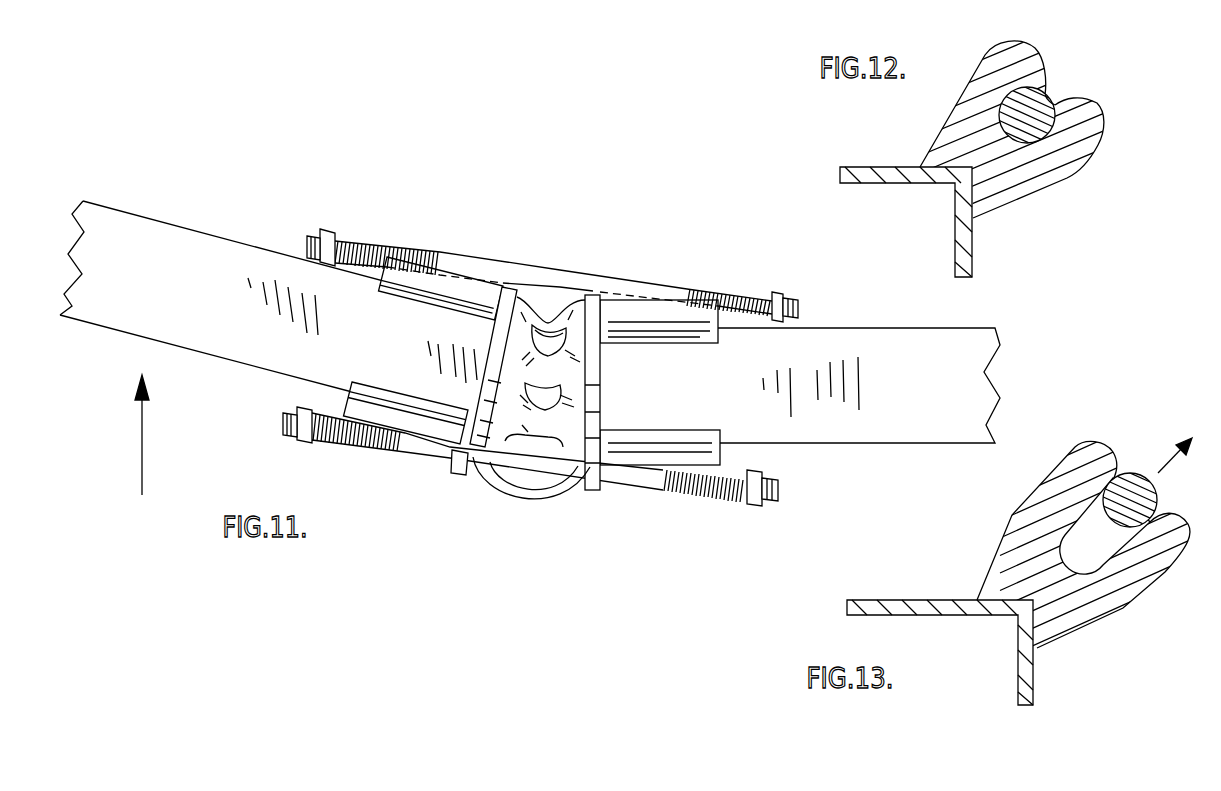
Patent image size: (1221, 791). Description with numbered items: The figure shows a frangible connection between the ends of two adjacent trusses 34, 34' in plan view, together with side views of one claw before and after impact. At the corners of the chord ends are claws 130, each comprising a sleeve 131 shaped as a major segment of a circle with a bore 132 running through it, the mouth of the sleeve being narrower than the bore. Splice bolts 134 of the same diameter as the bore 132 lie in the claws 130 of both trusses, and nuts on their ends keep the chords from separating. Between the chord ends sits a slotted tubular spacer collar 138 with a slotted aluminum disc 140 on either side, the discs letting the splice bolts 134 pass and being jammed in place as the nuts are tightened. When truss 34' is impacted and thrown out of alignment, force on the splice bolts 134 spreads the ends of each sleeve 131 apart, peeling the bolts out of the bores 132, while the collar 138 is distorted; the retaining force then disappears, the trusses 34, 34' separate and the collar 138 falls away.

In FIG. 11, the truss 34 is at (859, 350).
In FIG. 12, the truss 34 is at (906, 198).
In FIG. 13, the truss 34 is at (940, 628).
In FIG. 11, the impacted truss 34' is at (280, 281).
In FIG. 11, the claw 130 is at (466, 290).
In FIG. 12, the claw 130 is at (1070, 177).
In FIG. 13, the claw 130 is at (1165, 573).
In FIG. 11, the sleeve 131 is at (463, 423).
In FIG. 12, the bore 132 is at (1072, 86).
In FIG. 13, the bore 132 is at (1082, 528).
In FIG. 11, the splice bolt 134 is at (577, 272).
In FIG. 12, the splice bolt 134 is at (1047, 87).
In FIG. 13, the splice bolt 134 is at (1130, 473).
In FIG. 11, the slotted tubular spacer collar 138 is at (546, 496).
In FIG. 11, the slotted aluminum disc 140 is at (588, 300).